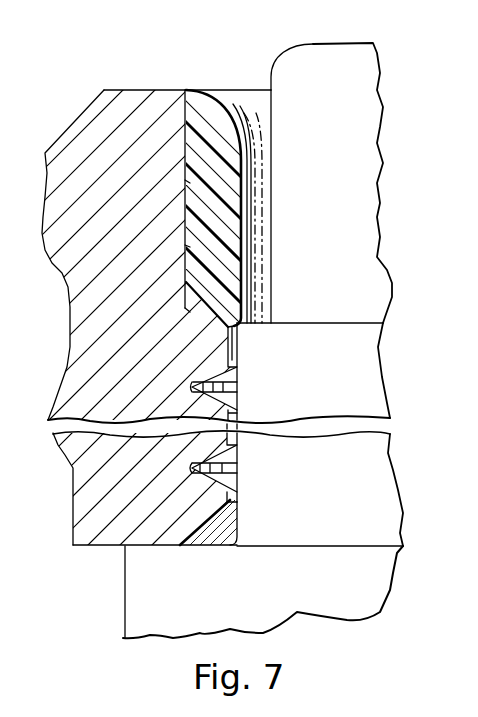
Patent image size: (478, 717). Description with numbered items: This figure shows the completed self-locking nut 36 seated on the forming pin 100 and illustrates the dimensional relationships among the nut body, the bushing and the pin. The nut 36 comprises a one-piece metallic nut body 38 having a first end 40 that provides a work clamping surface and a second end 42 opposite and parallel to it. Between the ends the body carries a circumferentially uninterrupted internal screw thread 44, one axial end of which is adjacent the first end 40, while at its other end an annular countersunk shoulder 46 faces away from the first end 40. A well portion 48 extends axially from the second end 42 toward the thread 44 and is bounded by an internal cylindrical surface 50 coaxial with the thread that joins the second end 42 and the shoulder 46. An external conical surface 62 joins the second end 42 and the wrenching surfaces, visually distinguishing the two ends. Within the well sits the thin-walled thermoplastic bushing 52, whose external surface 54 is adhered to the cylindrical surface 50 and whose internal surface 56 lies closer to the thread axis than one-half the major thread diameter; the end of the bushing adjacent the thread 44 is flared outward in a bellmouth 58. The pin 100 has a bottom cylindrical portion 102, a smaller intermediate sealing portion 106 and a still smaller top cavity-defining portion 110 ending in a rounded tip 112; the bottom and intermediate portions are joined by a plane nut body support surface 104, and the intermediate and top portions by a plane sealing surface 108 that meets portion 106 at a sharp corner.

The nut 36 is at (55, 108).
The external conical surface 62 is at (83, 115).
The second end 42 is at (160, 90).
The self-locking bushing 52 is at (213, 118).
The external surface of bushing 54 is at (186, 213).
The internal surface of bushing 56 is at (258, 243).
The bellmouth flare 58 is at (242, 327).
The well portion 48 is at (188, 187).
The cylindrical surface 50 is at (185, 250).
The countersunk shoulder 46 is at (185, 308).
The internal screw thread 44 is at (223, 402).
The nut body 38 is at (87, 508).
The first end 40 is at (107, 547).
The bottom cylindrical portion 102 is at (140, 612).
The nut body support surface 104 is at (297, 546).
The pin 100 is at (393, 599).
The intermediate sealing cylindrical portion 106 is at (357, 363).
The sealing surface 108 is at (313, 323).
The top cylindrical portion 110 is at (340, 70).
The rounded tip 112 is at (285, 53).